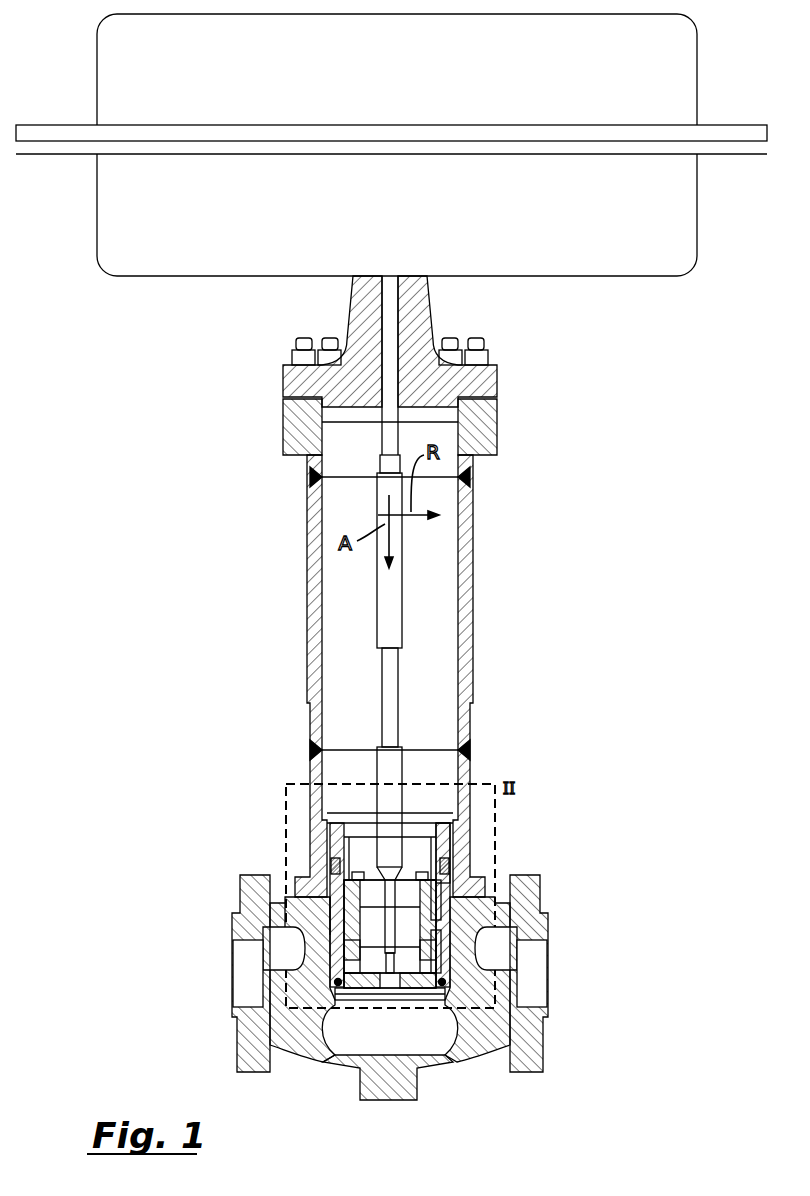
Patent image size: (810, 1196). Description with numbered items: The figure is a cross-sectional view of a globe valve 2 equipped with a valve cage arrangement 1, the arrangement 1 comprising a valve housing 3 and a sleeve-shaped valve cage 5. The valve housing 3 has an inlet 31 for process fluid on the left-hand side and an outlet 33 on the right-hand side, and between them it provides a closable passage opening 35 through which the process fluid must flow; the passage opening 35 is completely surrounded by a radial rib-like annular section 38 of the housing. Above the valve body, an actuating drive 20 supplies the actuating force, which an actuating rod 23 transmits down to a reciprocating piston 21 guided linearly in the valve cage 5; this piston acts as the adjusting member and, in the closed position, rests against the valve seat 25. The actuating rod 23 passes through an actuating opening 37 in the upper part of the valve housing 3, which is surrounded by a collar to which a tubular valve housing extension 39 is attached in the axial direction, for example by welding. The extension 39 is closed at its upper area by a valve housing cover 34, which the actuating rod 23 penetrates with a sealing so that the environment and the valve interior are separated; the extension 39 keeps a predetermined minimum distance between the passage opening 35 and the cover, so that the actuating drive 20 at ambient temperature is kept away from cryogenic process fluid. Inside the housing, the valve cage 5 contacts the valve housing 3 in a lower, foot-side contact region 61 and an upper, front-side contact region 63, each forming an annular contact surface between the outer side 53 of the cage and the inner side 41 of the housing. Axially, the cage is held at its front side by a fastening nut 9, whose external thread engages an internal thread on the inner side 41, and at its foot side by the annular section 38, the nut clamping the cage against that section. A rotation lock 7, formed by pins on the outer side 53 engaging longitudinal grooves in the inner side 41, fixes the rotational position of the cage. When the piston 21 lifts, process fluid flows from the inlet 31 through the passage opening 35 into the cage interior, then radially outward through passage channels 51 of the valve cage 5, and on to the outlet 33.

The arrangement 1 is at (290, 860).
The globe valve 2 is at (648, 468).
The valve housing 3 is at (244, 789).
The valve cage 5 is at (447, 905).
The rotation lock 7 is at (314, 898).
The fastening nut 9 is at (452, 836).
The actuating drive 20 is at (218, 67).
The reciprocating piston 21 is at (360, 950).
The actuating rod 23 is at (385, 588).
The valve seat 25 is at (429, 949).
The inlet 31 is at (245, 957).
The outlet 33 is at (534, 960).
The valve housing cover 34 is at (283, 383).
The passage opening 35 is at (361, 1007).
The actuating opening 37 is at (355, 750).
The annular section 38 is at (437, 1006).
The valve housing extension 39 is at (318, 592).
The inner side 41 is at (430, 899).
The passage channels 51 is at (440, 952).
The outer side 53 is at (440, 915).
The foot-side contact region 61 is at (316, 988).
The front-side contact region 63 is at (464, 884).